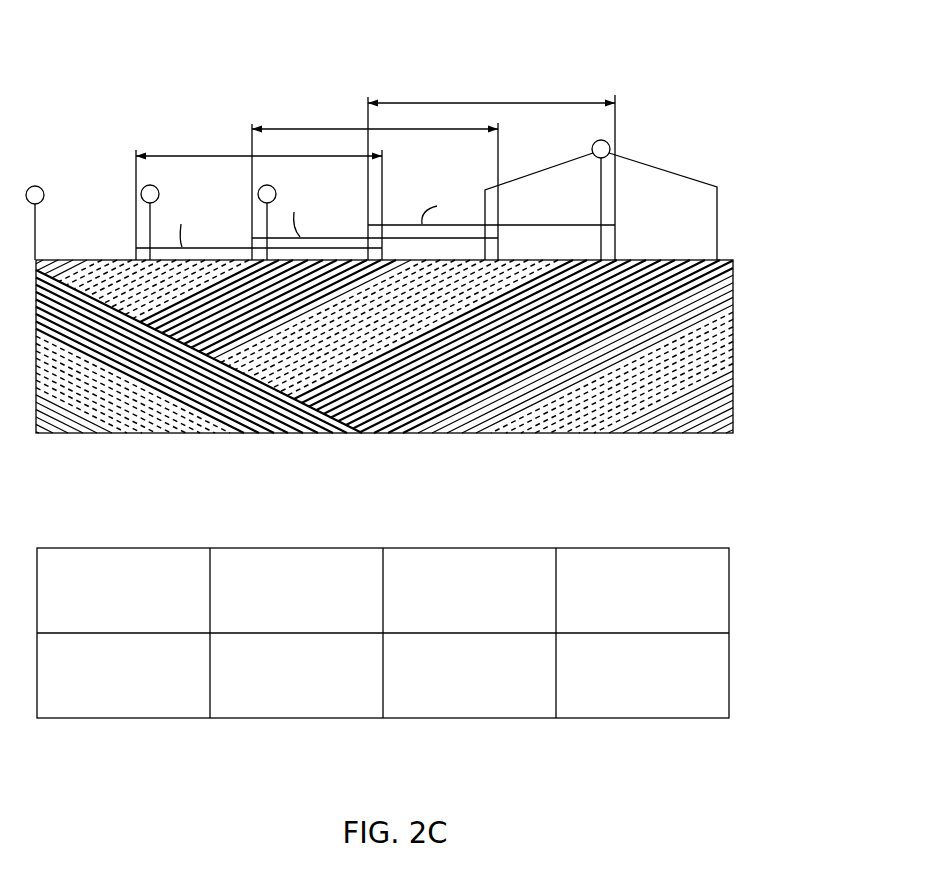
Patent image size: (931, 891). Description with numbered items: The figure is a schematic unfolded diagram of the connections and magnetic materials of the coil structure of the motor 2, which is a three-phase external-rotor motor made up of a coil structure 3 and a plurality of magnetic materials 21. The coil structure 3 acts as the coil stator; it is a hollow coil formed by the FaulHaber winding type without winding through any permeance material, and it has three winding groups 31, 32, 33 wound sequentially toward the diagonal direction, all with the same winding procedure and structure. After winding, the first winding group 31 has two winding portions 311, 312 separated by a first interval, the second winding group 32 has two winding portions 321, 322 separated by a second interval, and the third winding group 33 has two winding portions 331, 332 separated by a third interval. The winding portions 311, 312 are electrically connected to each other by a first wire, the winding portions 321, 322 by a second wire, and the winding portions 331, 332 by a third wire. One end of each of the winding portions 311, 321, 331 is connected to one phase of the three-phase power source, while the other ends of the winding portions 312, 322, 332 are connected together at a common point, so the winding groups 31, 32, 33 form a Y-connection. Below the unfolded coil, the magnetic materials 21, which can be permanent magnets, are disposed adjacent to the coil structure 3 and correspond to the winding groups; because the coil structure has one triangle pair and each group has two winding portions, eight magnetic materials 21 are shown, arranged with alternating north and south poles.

The motor 2 is at (106, 72).
The coil structure 3 is at (119, 194).
The magnetic materials 21 is at (90, 557).
The winding group 31 is at (455, 429).
The winding portion 311 is at (82, 277).
The winding portion 312 is at (423, 263).
The winding group 32 is at (219, 431).
The winding portion 321 is at (220, 272).
The winding portion 322 is at (538, 263).
The winding group 33 is at (331, 429).
The winding portion 331 is at (340, 262).
The winding portion 332 is at (647, 265).